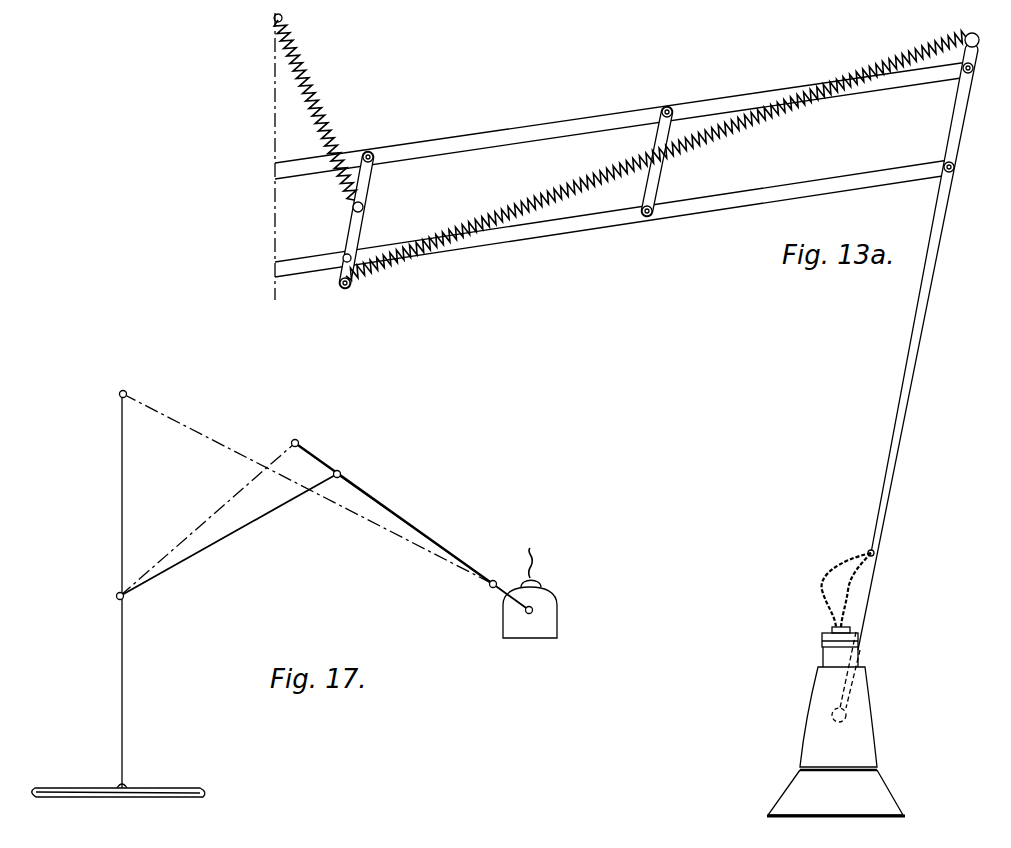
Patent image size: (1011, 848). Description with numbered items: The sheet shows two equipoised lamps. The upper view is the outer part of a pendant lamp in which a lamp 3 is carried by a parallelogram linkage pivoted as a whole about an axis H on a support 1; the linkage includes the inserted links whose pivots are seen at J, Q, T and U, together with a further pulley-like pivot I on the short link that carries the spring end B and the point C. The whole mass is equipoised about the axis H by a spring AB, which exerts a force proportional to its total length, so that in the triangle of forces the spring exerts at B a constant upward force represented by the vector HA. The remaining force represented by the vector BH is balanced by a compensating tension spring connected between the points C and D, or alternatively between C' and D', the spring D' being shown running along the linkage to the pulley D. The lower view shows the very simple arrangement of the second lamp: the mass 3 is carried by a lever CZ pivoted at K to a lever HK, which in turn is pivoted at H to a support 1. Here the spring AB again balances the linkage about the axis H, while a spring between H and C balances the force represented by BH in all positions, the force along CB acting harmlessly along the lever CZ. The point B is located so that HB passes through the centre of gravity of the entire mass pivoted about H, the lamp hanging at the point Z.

In FIG. 17, the support 1 is at (121, 690).
In FIG. 13A, the lamp 3 is at (865, 737).
In FIG. 17, the lamp 3 is at (545, 612).
In FIG. 17, the spring anchorage point A is at (125, 391).
In FIG. 13A, the spring attachment point B is at (364, 205).
In FIG. 17, the spring attachment point B is at (490, 587).
In FIG. 13A, the compensating spring point C is at (342, 294).
In FIG. 17, the compensating spring point C is at (297, 440).
In FIG. 13A, the compensating spring point D is at (985, 52).
In FIG. 13A, the alternative compensating spring point D' is at (658, 155).
In FIG. 17, the pivot axis H is at (124, 598).
In FIG. 13A, the pulley I is at (367, 143).
In FIG. 13A, the link pivot J is at (344, 262).
In FIG. 17, the pivot K is at (340, 472).
In FIG. 13A, the link pivot Q is at (960, 173).
In FIG. 13A, the link pivot T is at (667, 98).
In FIG. 13A, the link pivot U is at (648, 224).
In FIG. 13A, the lamp pivot Z is at (831, 714).
In FIG. 17, the lamp pivot Z is at (529, 614).